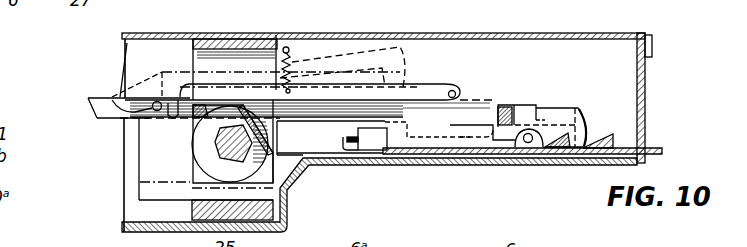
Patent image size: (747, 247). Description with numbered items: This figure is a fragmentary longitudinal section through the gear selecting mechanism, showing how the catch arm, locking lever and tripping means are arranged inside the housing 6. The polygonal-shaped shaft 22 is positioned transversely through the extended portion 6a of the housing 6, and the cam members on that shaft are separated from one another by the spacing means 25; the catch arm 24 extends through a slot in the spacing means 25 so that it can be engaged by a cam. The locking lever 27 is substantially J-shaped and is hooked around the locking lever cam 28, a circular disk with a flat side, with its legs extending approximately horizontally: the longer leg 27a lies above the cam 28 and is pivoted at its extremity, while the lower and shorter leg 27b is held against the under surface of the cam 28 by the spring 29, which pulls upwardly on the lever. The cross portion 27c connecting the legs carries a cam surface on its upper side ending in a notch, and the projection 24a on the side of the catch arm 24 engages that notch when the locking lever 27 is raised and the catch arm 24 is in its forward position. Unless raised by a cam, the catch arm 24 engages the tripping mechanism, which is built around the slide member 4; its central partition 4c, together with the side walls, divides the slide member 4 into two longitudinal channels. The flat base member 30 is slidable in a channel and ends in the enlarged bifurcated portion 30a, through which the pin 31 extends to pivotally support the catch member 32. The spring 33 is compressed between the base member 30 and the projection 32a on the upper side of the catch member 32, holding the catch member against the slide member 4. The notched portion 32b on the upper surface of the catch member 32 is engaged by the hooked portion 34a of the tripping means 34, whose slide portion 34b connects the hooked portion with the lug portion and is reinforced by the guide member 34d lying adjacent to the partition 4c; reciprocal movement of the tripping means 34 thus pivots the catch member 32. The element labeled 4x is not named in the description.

The slide member 4 is at (406, 118).
The central partition 4c is at (465, 125).
The frame flange 4x is at (645, 147).
The housing 6 is at (533, 50).
The extended portion of the housing 6a is at (458, 36).
The polygonal-shaped shaft 22 is at (218, 142).
The catch arm 24 is at (96, 110).
The projection 24a is at (112, 100).
The spacing means 25 is at (310, 64).
The locking lever 27 is at (147, 155).
The longer leg 27a is at (172, 112).
The shorter leg 27b is at (227, 190).
The cross portion 27c is at (147, 133).
The locking lever cam 28 is at (210, 140).
The spring 29 is at (287, 47).
The flat base member 30 is at (458, 137).
The enlarged bifurcated portion 30a is at (518, 134).
The pin 31 is at (538, 140).
The catch member 32 is at (565, 113).
The projection 32a is at (506, 106).
The notched portion 32b is at (540, 110).
The spring 33 is at (511, 107).
The tripping means 34 is at (502, 105).
The hooked portion 34a is at (534, 115).
The slide portion 34b is at (358, 152).
The guide member 34d is at (430, 150).